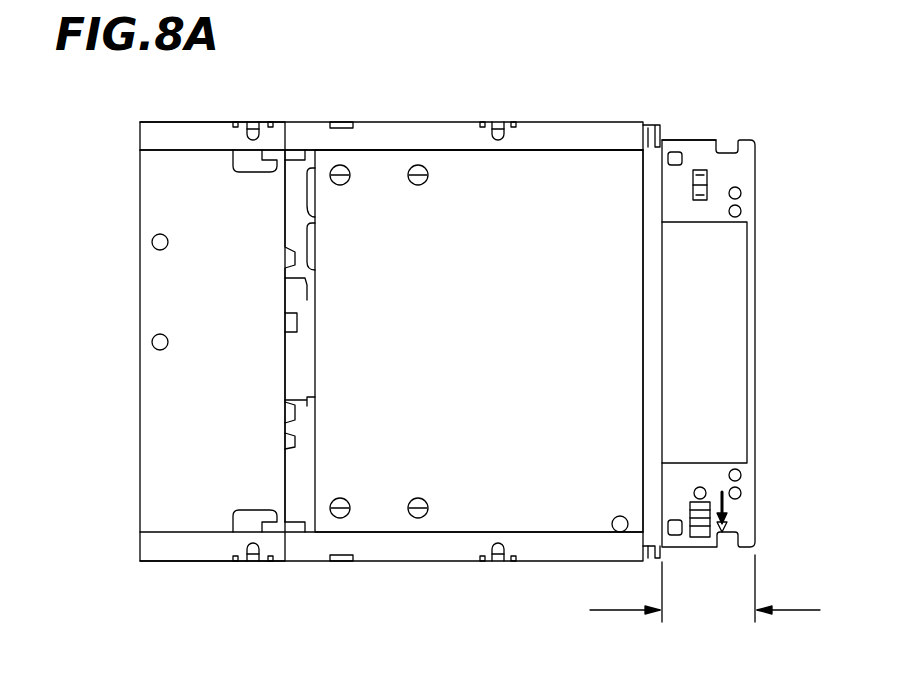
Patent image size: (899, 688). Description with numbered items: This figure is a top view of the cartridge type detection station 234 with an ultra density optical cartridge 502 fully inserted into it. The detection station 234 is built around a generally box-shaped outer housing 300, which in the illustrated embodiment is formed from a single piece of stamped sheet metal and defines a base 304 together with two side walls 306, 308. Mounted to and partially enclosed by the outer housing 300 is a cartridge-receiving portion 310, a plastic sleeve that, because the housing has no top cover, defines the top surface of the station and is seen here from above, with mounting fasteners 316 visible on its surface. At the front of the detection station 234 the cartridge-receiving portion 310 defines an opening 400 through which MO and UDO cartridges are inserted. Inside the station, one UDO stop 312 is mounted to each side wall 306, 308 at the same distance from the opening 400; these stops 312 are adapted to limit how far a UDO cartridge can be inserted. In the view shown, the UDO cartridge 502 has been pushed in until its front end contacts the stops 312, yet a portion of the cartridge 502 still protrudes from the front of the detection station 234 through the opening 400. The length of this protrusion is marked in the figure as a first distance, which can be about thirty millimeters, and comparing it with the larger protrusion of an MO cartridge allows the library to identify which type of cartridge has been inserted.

The cartridge type detection station 234 is at (122, 105).
The outer housing 300 is at (192, 580).
The base 304 is at (160, 418).
The side wall 306 is at (220, 122).
The side wall 308 is at (300, 562).
The cartridge-receiving portion 310 is at (596, 200).
The UDO stop 312 is at (280, 158).
The mounting screws 316 is at (490, 358).
The opening 400 is at (670, 333).
The UDO cartridge 502 is at (696, 148).